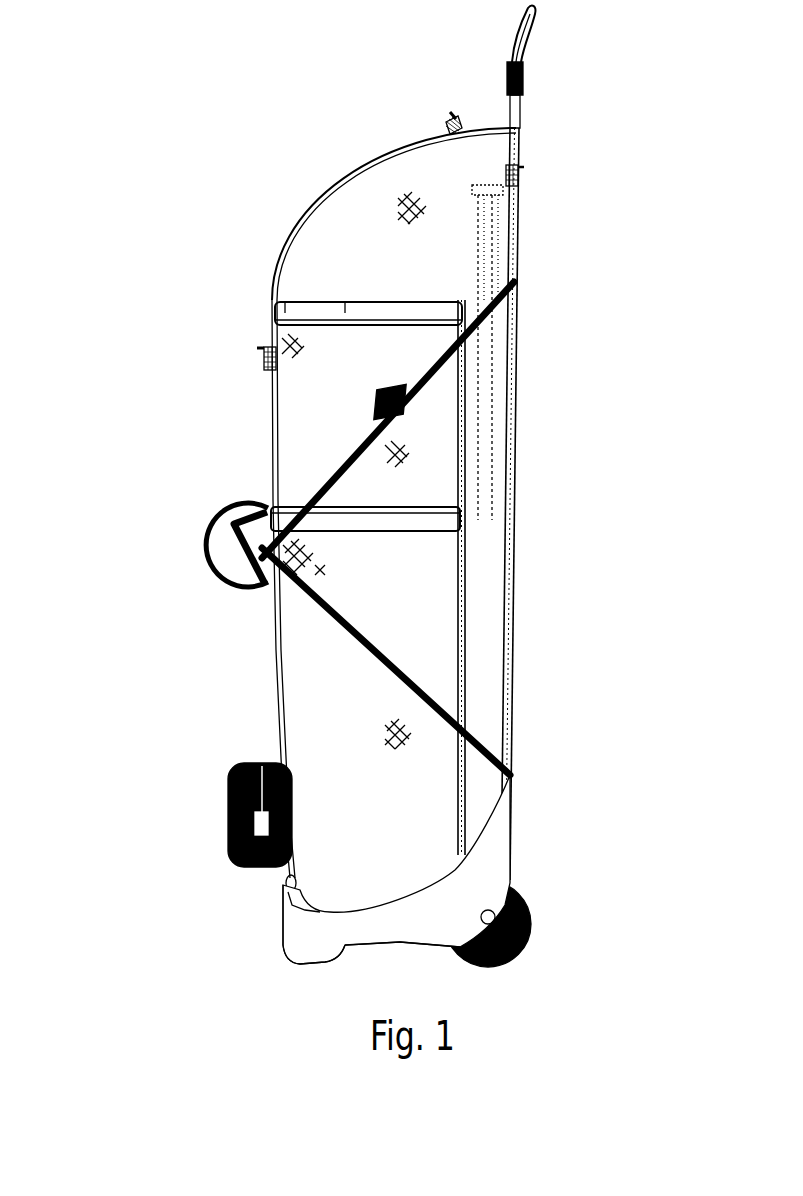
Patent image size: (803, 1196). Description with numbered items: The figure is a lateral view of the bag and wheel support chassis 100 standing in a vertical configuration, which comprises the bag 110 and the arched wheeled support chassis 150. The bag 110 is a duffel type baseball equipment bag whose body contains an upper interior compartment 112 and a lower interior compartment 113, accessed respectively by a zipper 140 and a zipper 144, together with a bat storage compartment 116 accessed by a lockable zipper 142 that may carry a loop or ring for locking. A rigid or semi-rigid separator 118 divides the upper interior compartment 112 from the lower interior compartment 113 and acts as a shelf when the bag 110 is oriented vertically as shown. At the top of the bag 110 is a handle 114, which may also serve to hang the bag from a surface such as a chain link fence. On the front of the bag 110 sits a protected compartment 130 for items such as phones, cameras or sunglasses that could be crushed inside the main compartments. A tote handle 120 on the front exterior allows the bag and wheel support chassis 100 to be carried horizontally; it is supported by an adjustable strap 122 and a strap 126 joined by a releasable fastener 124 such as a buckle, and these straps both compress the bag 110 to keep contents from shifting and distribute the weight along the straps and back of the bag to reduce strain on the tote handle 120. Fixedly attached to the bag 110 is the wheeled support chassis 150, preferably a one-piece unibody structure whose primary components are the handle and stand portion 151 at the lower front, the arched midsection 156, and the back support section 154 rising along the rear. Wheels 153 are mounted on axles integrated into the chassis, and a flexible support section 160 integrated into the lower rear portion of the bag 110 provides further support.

The bag and wheel support chassis 100 is at (163, 111).
The bag 110 is at (116, 375).
The upper interior compartment 112 is at (367, 233).
The lower interior compartment 113 is at (297, 673).
The handle 114 is at (522, 77).
The bat storage compartment 116 is at (483, 238).
The separator 118 is at (273, 300).
The tote handle 120 is at (245, 490).
The adjustable strap 122 is at (480, 306).
The releasable fastener 124 is at (402, 410).
The strap 126 is at (416, 680).
The protected compartment 130 is at (228, 836).
The zipper 140 is at (450, 116).
The zipper 142 is at (518, 172).
The zipper 144 is at (263, 358).
The wheeled support chassis 150 is at (587, 925).
The handle and stand portion 151 is at (297, 947).
The wheels 153 is at (517, 964).
The back support section 154 is at (490, 868).
The arched midsection 156 is at (403, 927).
The flexible support section 160 is at (508, 720).